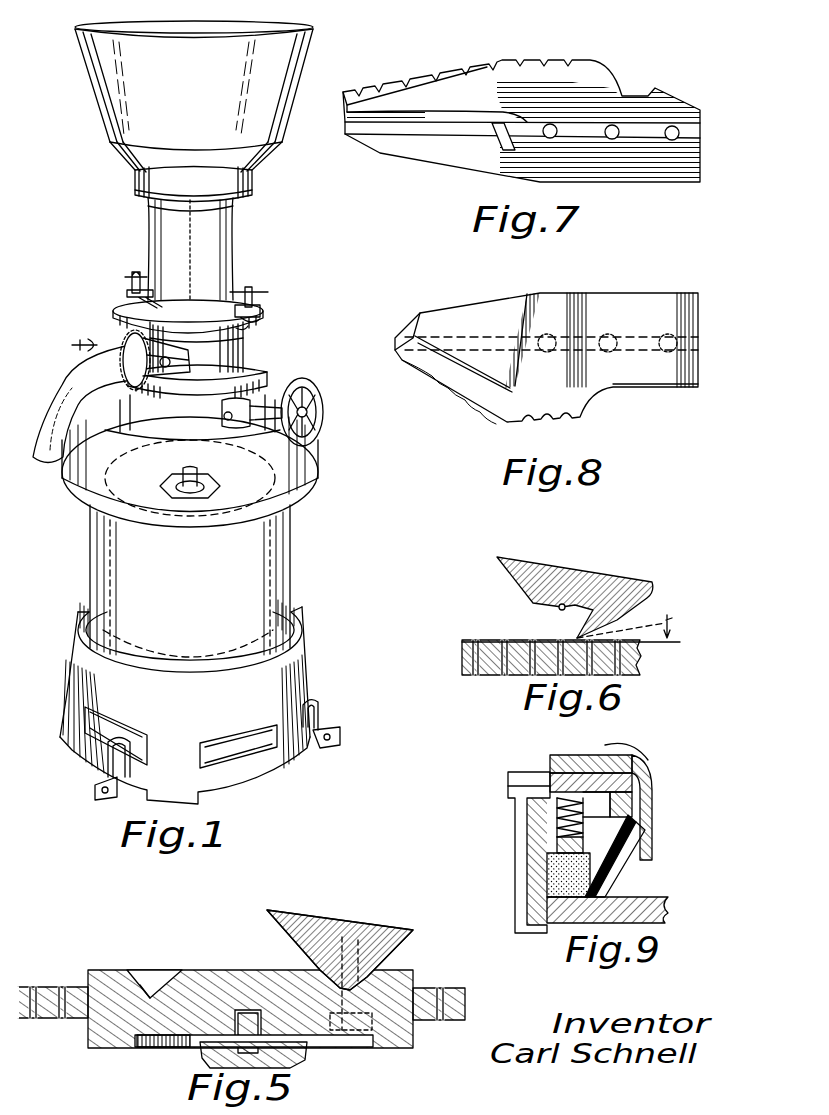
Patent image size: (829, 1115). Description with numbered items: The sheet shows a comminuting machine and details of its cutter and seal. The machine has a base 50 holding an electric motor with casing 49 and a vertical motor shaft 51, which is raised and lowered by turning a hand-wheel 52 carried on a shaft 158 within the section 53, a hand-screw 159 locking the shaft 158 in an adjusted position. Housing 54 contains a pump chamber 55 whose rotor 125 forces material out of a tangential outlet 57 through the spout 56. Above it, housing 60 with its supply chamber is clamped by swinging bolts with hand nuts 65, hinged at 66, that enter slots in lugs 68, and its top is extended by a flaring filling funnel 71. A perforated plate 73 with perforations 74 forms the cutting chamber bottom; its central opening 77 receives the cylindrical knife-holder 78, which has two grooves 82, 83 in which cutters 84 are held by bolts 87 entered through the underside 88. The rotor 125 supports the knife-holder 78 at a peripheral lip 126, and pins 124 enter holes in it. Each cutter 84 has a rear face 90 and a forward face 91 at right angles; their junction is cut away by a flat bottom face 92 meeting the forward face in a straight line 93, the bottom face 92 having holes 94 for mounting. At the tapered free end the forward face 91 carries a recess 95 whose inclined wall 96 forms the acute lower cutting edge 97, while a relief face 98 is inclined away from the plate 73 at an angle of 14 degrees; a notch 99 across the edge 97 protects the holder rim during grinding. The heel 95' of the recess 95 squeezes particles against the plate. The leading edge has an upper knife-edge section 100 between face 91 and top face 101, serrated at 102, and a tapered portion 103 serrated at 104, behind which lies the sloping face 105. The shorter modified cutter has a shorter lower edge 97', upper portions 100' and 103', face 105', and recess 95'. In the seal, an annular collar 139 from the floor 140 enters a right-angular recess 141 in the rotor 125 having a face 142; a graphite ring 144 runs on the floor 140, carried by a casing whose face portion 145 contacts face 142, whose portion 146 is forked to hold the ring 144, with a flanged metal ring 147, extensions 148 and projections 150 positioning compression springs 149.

In FIG. 1, the motor casing 49 is at (108, 497).
In FIG. 1, the base 50 is at (95, 560).
In FIG. 1, the vertical motor shaft 51 is at (185, 497).
In FIG. 1, the hand-wheel 52 is at (308, 391).
In FIG. 1, the section 53 is at (184, 427).
In FIG. 1, the housing 54 is at (245, 352).
In FIG. 9, the pump chamber 55 is at (626, 889).
In FIG. 1, the spout 56 is at (64, 388).
In FIG. 1, the tangential outlet 57 is at (122, 338).
In FIG. 1, the housing 60 is at (218, 232).
In FIG. 1, the hand nuts 65 is at (135, 272).
In FIG. 1, the hinge 66 is at (262, 330).
In FIG. 1, the lugs 68 is at (127, 294).
In FIG. 1, the flaring filling funnel 71 is at (116, 95).
In FIG. 6, the perforated plate 73 is at (636, 665).
In FIG. 5, the perforated plate 73 is at (47, 1018).
In FIG. 6, the perforations 74 is at (503, 674).
In FIG. 5, the perforations 74 is at (60, 988).
In FIG. 5, the central opening 77 is at (422, 1022).
In FIG. 5, the knife-holder 78 is at (197, 976).
In FIG. 5, the groove 82 is at (354, 1033).
In FIG. 5, the groove 83 is at (153, 974).
In FIG. 7, the cutter 84 is at (405, 71).
In FIG. 6, the cutter 84 is at (557, 576).
In FIG. 5, the cutter 84 is at (328, 903).
In FIG. 5, the bolts 87 is at (375, 920).
In FIG. 5, the underside of the cutter-head 88 is at (194, 1048).
In FIG. 7, the rear face 90 is at (632, 165).
In FIG. 6, the rear face 90 is at (652, 590).
In FIG. 5, the rear face 90 is at (410, 936).
In FIG. 7, the forward face 91 is at (468, 90).
In FIG. 6, the forward face 91 is at (521, 579).
In FIG. 5, the forward face 91 is at (306, 959).
In FIG. 7, the bottom face 92 is at (702, 133).
In FIG. 5, the bottom face 92 is at (340, 1035).
In FIG. 7, the straight line 93 is at (562, 124).
In FIG. 7, the holes 94 is at (614, 125).
In FIG. 6, the recess 95 is at (536, 606).
In FIG. 8, the heel 95' is at (385, 374).
In FIG. 6, the heel 95' is at (596, 563).
In FIG. 6, the inclined flat wall 96 is at (570, 628).
In FIG. 7, the cutting edge 97 is at (437, 102).
In FIG. 6, the cutting edge 97 is at (518, 625).
In FIG. 8, the lower knife-edge 97' is at (475, 326).
In FIG. 7, the relief face 98 is at (398, 134).
In FIG. 6, the relief face 98 is at (633, 622).
In FIG. 7, the notch 99 is at (503, 150).
In FIG. 7, the upper knife-edge section 100 is at (541, 42).
In FIG. 5, the upper knife-edge section 100 is at (271, 887).
In FIG. 8, the upper-knife portion 100' is at (556, 438).
In FIG. 5, the top face 101 is at (350, 916).
In FIG. 7, the serrations 102 is at (566, 58).
In FIG. 7, the upper knife-edge portion 103 is at (417, 69).
In FIG. 6, the upper knife-edge portion 103 is at (477, 540).
In FIG. 8, the upper-knife portion 103' is at (438, 411).
In FIG. 7, the serrations 104 is at (381, 85).
In FIG. 6, the serrations 104 is at (494, 562).
In FIG. 6, the tapered face 105 is at (622, 553).
In FIG. 8, the tapered face 105' is at (546, 346).
In FIG. 5, the pins 124 is at (246, 1012).
In FIG. 9, the rotor 125 is at (640, 832).
In FIG. 5, the peripheral lip 126 is at (113, 1050).
In FIG. 9, the upstanding annular collar 139 is at (538, 819).
In FIG. 9, the floor 140 is at (660, 897).
In FIG. 9, the right-angular recess 141 is at (624, 852).
In FIG. 9, the face 142 is at (586, 757).
In FIG. 9, the graphite or plastic ring 144 is at (556, 881).
In FIG. 9, the annular face portion 145 is at (636, 760).
In FIG. 9, the casing portion 146 is at (638, 818).
In FIG. 9, the annular flanged metal ring 147 is at (640, 790).
In FIG. 9, the extensions 148 is at (557, 764).
In FIG. 9, the compression springs 149 is at (556, 822).
In FIG. 9, the projections 150 is at (556, 843).
In FIG. 1, the shaft 158 is at (312, 421).
In FIG. 1, the hand-screw 159 is at (226, 420).
In FIG. 6, the relief angle 14 is at (582, 628).